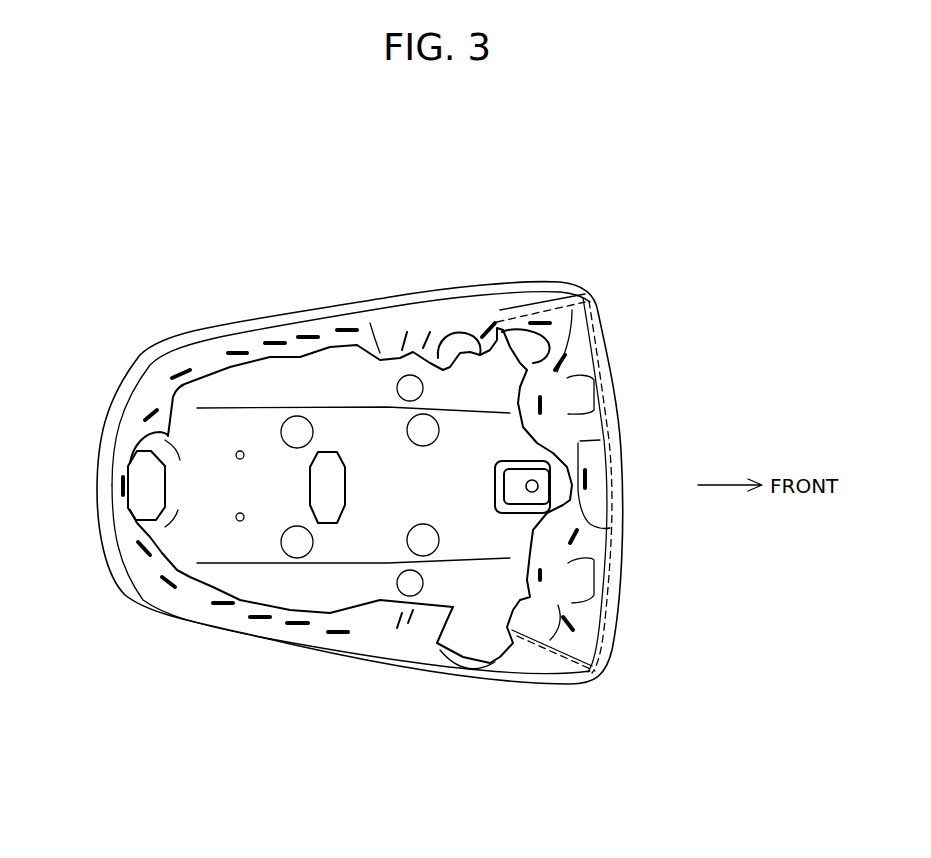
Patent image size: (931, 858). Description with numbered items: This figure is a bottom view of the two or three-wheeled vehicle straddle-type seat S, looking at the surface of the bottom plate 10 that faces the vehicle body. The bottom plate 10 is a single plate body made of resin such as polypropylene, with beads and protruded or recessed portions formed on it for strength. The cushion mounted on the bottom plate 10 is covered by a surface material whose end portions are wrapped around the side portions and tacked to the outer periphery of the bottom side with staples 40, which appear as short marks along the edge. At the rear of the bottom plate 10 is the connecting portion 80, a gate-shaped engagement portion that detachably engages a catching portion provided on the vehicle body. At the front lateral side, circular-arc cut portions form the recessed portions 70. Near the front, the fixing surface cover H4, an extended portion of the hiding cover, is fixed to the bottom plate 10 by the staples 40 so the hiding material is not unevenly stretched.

The two or three-wheeled vehicle straddle-type seat S is at (97, 180).
The bottom plate 10 is at (263, 398).
The staples 40 is at (592, 483).
The recessed portion 70 is at (586, 393).
The connecting portion 80 is at (118, 483).
The fixing surface cover H4 is at (592, 468).